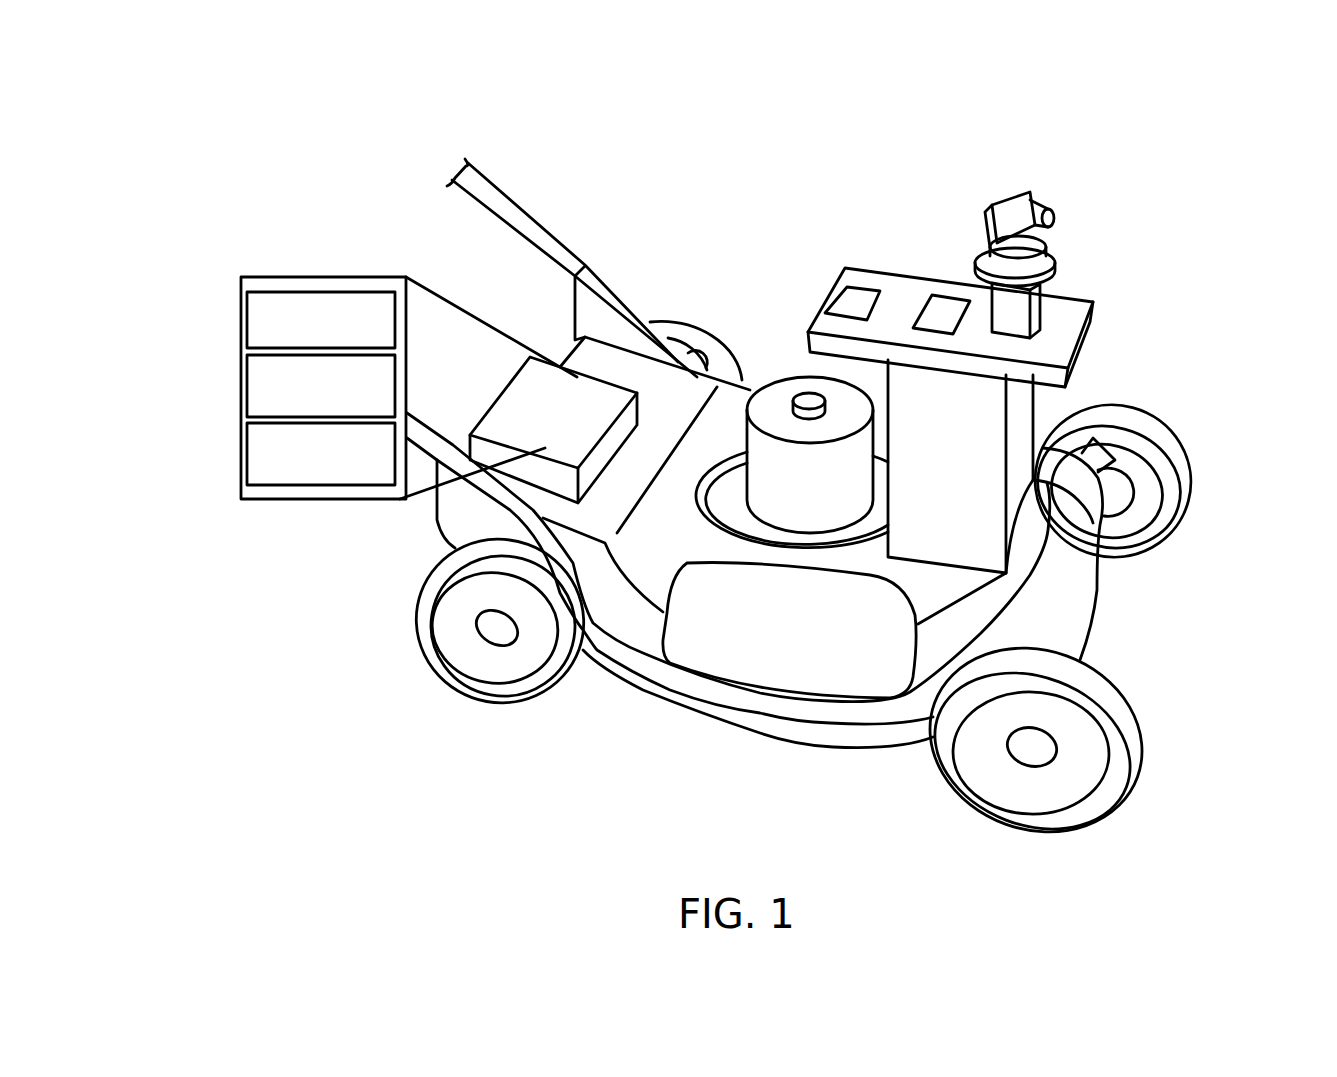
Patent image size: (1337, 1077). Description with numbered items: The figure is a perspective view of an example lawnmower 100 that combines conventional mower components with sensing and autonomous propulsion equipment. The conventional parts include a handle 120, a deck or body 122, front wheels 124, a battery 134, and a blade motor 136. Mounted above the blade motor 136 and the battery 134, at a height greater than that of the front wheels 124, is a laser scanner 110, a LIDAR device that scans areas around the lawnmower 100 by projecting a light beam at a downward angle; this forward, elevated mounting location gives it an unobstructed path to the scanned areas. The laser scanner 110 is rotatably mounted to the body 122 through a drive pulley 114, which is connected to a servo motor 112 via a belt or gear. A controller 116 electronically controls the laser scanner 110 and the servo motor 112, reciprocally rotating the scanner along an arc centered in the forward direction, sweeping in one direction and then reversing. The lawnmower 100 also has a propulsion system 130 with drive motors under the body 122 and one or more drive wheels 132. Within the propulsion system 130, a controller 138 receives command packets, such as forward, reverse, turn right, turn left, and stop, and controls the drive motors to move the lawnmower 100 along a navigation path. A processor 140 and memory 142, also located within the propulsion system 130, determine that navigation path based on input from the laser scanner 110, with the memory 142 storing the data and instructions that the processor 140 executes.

The lawnmower 100 is at (390, 146).
The laser scanner 110 is at (1018, 217).
The servo motor 112 is at (1013, 317).
The drive pulley 114 is at (1053, 267).
The controller 116 is at (848, 303).
The handle 120 is at (497, 192).
The deck or body 122 is at (658, 587).
The front wheels 124 is at (1000, 775).
The propulsion system 130 is at (300, 278).
The drive wheels 132 is at (443, 657).
The battery 134 is at (1017, 502).
The blade motor 136 is at (802, 395).
The controller 138 is at (247, 460).
The processor 140 is at (247, 322).
The memory 142 is at (247, 390).